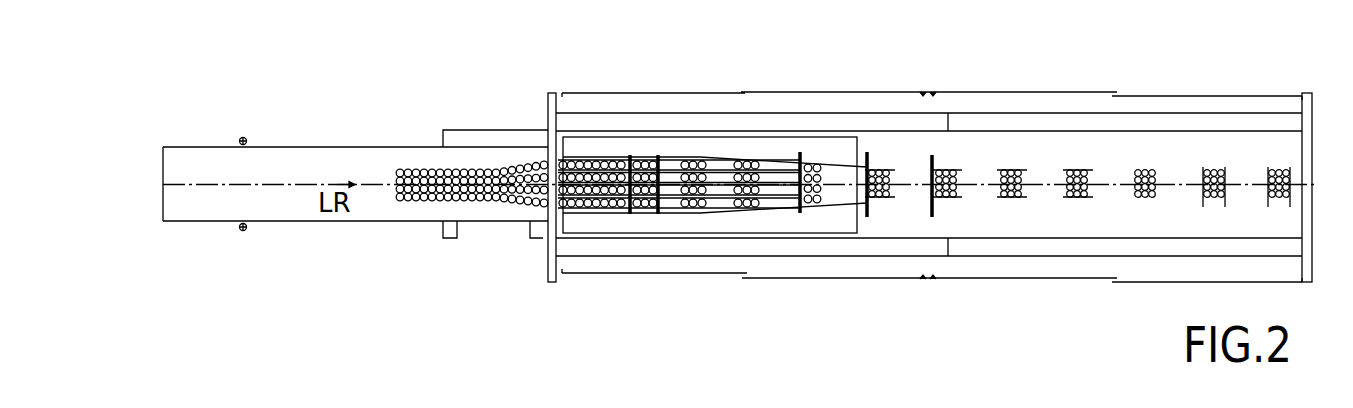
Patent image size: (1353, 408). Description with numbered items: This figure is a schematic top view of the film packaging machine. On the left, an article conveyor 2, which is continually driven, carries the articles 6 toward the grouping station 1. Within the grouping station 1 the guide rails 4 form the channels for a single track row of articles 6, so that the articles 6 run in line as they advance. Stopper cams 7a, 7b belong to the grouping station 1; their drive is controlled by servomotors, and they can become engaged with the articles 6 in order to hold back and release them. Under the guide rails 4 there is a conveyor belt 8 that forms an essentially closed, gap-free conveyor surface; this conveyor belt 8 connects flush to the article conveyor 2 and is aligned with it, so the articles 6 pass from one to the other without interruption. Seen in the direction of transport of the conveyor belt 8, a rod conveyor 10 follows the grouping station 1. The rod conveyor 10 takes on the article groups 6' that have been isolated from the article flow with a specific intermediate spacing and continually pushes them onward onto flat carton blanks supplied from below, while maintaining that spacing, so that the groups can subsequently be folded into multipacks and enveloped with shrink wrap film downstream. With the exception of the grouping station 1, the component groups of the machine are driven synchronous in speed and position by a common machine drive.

The grouping station 1 is at (642, 223).
The article conveyor 2 is at (306, 163).
The guide rails 4 is at (670, 210).
The articles 6 is at (602, 154).
The article groups 6' is at (1077, 132).
The stopper cam 7a is at (657, 155).
The stopper cam 7b is at (629, 157).
The conveyor belt 8 is at (588, 223).
The rod conveyor 10 is at (800, 213).